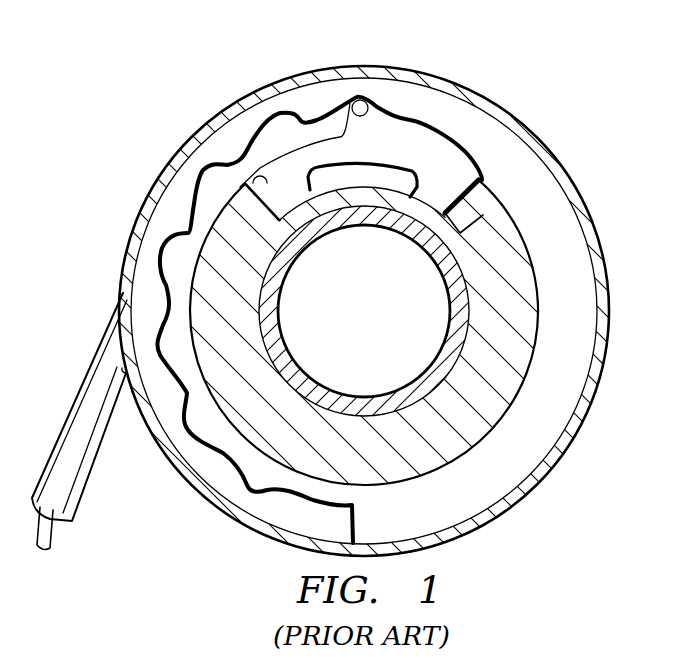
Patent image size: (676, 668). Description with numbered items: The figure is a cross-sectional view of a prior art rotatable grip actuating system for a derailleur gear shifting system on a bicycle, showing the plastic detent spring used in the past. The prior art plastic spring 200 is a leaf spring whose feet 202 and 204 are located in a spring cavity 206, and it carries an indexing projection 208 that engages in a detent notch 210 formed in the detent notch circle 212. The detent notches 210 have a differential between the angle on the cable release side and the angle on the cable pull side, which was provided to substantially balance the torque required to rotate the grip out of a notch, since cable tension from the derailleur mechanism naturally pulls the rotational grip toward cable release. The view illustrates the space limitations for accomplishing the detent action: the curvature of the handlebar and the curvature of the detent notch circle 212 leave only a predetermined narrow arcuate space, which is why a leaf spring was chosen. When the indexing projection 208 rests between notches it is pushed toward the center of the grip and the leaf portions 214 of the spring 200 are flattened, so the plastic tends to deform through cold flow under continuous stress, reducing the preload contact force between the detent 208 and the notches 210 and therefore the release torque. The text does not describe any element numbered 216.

The plastic spring 200 is at (452, 153).
The foot 202 is at (327, 228).
The foot 204 is at (420, 203).
The spring cavity 206 is at (478, 207).
The indexing projection 208 is at (372, 103).
The detent notch 210 is at (348, 107).
The detent notch circle 212 is at (310, 90).
The leaf portions 214 is at (280, 150).
The cable tube 216 is at (79, 421).